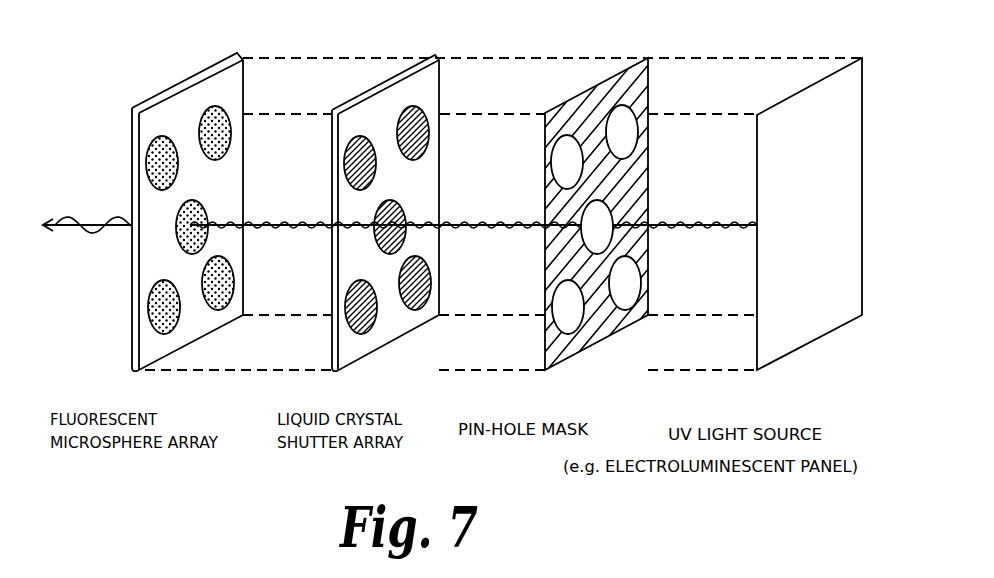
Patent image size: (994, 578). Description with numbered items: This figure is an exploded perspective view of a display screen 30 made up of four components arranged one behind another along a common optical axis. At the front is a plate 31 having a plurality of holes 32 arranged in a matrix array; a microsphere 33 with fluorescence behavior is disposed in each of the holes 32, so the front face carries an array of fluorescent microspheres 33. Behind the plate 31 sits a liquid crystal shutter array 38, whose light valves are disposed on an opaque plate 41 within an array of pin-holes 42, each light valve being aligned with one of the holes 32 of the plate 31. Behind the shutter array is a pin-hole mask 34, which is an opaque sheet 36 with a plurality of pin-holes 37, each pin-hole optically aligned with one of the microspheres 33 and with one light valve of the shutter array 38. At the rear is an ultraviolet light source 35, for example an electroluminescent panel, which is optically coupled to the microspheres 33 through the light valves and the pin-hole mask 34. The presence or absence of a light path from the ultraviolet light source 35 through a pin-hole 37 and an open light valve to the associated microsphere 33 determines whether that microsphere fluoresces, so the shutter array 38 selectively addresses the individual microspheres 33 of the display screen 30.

The display screen 30 is at (410, 128).
The plate 31 is at (148, 350).
The holes 32 is at (157, 302).
The microspheres 33 is at (218, 130).
The pin-hole mask 34 is at (642, 62).
The ultraviolet light source 35 is at (803, 305).
The opaque sheet 36 is at (545, 350).
The pin-holes 37 is at (622, 130).
The liquid crystal shutter array 38 is at (427, 93).
The opaque plate 41 is at (383, 332).
The array of pin-holes 42 is at (352, 327).